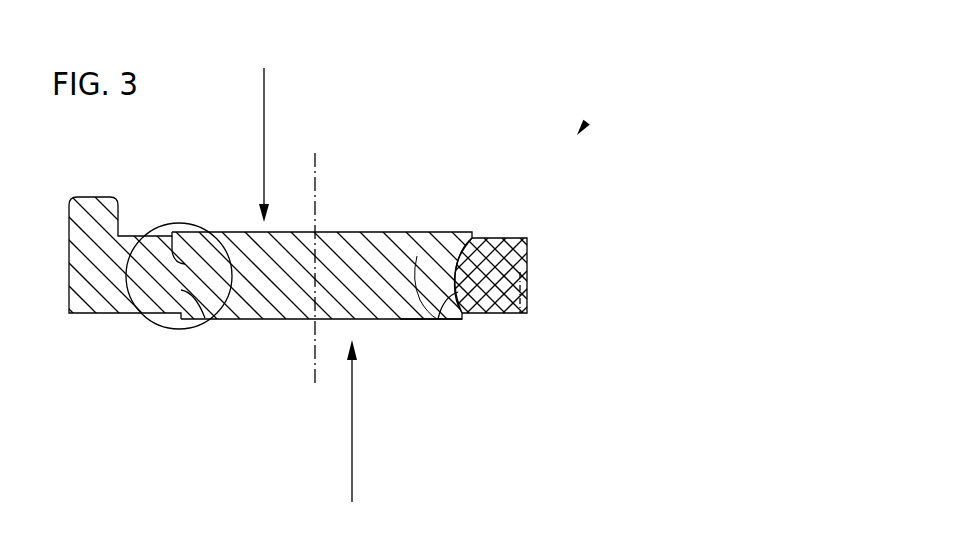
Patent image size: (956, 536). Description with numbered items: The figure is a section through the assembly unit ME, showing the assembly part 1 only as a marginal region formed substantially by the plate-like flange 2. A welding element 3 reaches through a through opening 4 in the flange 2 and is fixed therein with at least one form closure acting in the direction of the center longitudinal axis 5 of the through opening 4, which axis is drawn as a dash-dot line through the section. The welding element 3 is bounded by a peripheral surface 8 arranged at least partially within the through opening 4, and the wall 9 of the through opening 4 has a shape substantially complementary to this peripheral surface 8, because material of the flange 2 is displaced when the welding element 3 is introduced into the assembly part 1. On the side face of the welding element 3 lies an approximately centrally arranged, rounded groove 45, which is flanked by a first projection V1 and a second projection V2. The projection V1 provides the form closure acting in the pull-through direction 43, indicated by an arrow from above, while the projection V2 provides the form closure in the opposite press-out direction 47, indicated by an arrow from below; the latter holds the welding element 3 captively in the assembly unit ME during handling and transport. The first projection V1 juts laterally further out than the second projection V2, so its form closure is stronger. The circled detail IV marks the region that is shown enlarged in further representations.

The assembly part 1 is at (68, 328).
The flange 2 is at (531, 253).
The welding element 3 is at (402, 242).
The through opening 4 is at (437, 318).
The center longitudinal axis 5 is at (315, 172).
The peripheral surface 8 is at (155, 235).
The wall 9 is at (190, 300).
The pull-through direction 43 is at (263, 113).
The groove 45 is at (458, 265).
The press-out direction 47 is at (352, 468).
The first projection V1 is at (472, 237).
The second projection V2 is at (465, 315).
The assembly unit ME is at (586, 122).
The detail IV is at (173, 332).